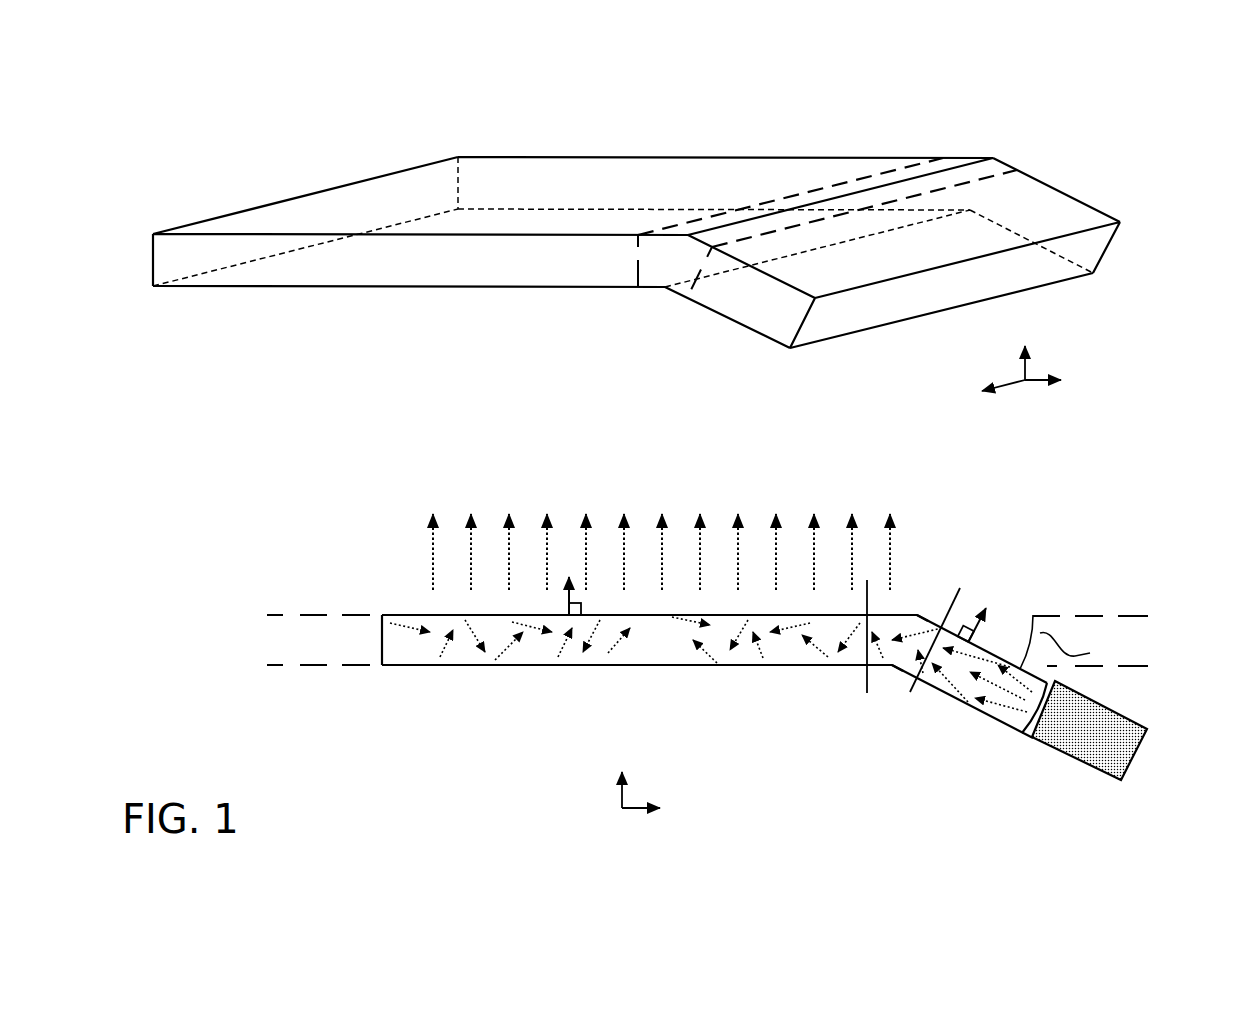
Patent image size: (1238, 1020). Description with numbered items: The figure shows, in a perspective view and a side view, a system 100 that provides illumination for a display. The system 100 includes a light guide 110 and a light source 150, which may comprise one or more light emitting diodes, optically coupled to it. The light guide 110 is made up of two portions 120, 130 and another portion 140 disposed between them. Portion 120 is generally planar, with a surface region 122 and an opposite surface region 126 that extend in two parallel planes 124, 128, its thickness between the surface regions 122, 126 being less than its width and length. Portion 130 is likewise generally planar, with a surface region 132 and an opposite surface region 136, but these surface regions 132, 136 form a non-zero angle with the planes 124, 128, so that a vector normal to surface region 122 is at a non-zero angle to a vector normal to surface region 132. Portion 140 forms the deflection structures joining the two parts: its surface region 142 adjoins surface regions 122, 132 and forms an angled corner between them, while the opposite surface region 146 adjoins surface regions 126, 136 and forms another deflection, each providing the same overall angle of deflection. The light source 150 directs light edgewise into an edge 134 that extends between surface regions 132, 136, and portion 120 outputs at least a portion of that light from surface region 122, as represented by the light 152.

The system 100 is at (1182, 578).
The light guide 110 is at (663, 437).
The portion 120 is at (638, 293).
The surface region 122 is at (420, 610).
The plane 124 is at (305, 610).
The surface region 126 is at (420, 670).
The plane 128 is at (305, 670).
The portion 130 is at (892, 267).
The surface region 132 is at (1004, 648).
The edge 134 is at (1090, 252).
The surface region 136 is at (1006, 732).
The portion 140 is at (942, 149).
The surface region 142 is at (916, 610).
The surface region 146 is at (891, 670).
The light source 150 is at (1082, 748).
The light 152 is at (632, 567).